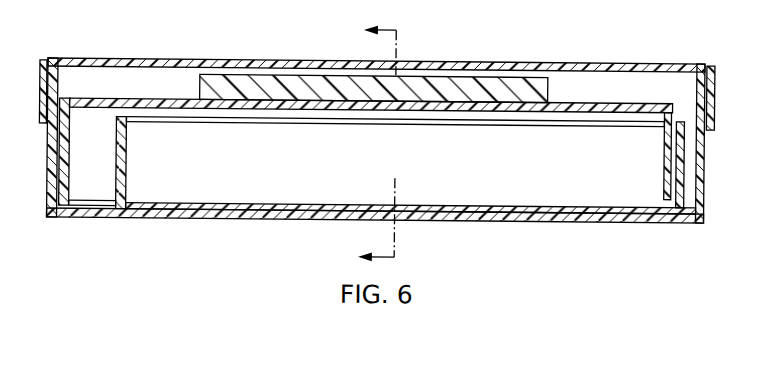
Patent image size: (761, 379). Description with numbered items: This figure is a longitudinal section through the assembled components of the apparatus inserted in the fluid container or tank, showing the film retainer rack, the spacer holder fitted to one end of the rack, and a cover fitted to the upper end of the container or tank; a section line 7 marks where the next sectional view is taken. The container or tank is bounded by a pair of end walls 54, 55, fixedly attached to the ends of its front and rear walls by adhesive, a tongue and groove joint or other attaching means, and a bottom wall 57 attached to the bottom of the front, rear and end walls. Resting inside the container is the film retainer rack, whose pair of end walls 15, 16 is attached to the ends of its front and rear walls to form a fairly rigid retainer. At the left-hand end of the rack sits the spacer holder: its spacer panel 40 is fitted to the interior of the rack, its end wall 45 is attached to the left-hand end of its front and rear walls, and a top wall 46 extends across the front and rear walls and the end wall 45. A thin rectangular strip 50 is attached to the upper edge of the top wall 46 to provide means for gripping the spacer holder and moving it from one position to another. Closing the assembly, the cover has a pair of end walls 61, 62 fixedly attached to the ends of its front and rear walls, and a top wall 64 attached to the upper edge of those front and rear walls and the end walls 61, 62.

The section line 7- 7 is at (378, 141).
The end wall 15 is at (128, 173).
The end wall 16 is at (684, 187).
The spacer panel 40 is at (664, 159).
The end wall 45 is at (70, 177).
The top wall 46 is at (577, 98).
The thin rectangular strip 50 is at (479, 73).
The end wall 54 is at (48, 146).
The end wall 55 is at (705, 166).
The bottom wall 57 is at (176, 218).
The end wall 61 is at (41, 76).
The end wall 62 is at (715, 87).
The top wall 64 is at (288, 58).